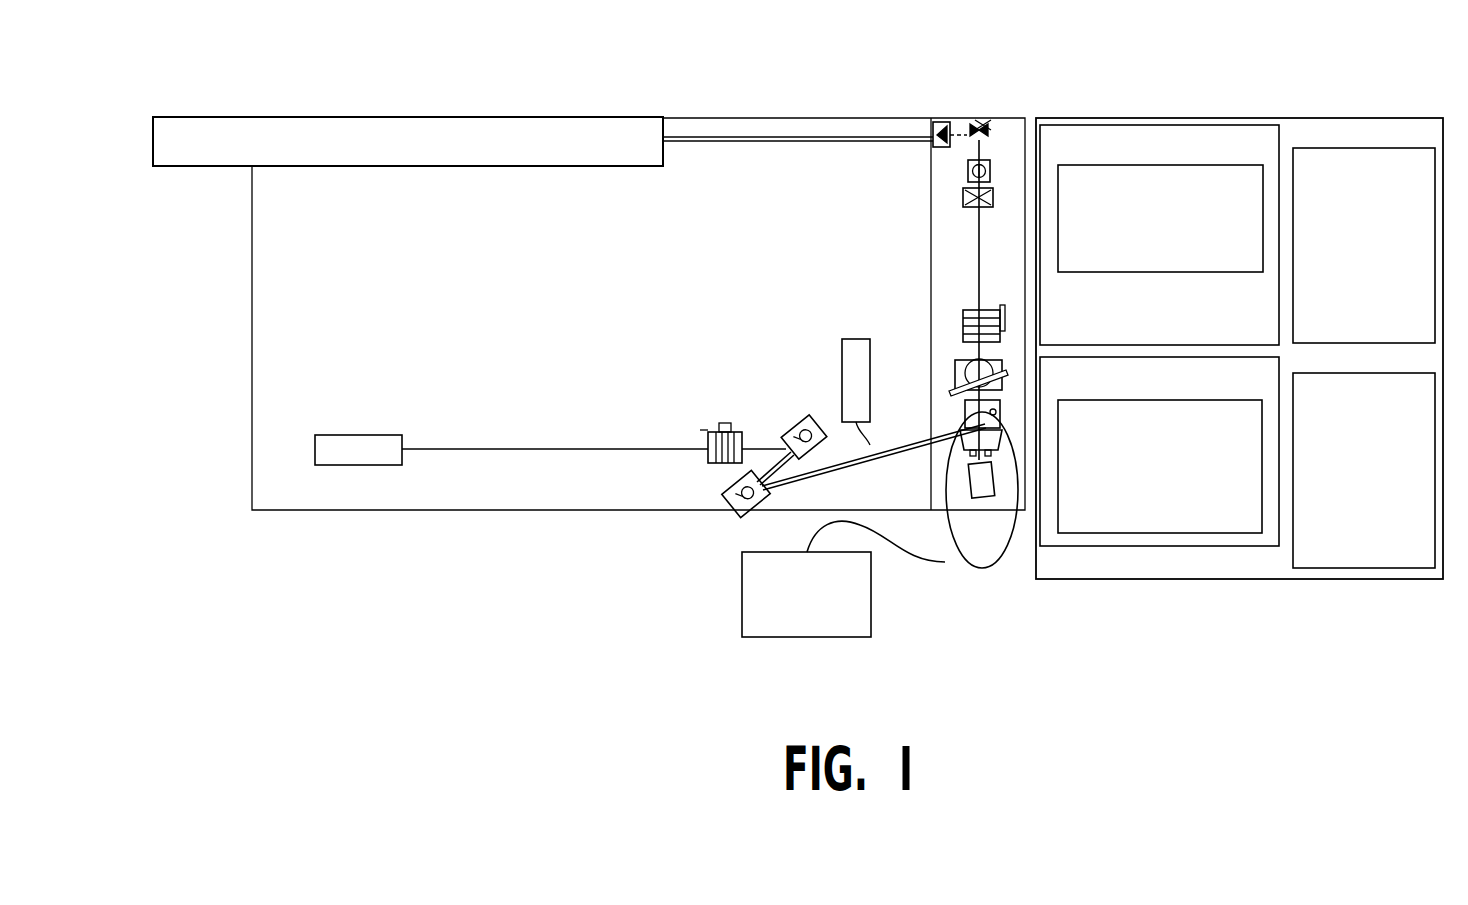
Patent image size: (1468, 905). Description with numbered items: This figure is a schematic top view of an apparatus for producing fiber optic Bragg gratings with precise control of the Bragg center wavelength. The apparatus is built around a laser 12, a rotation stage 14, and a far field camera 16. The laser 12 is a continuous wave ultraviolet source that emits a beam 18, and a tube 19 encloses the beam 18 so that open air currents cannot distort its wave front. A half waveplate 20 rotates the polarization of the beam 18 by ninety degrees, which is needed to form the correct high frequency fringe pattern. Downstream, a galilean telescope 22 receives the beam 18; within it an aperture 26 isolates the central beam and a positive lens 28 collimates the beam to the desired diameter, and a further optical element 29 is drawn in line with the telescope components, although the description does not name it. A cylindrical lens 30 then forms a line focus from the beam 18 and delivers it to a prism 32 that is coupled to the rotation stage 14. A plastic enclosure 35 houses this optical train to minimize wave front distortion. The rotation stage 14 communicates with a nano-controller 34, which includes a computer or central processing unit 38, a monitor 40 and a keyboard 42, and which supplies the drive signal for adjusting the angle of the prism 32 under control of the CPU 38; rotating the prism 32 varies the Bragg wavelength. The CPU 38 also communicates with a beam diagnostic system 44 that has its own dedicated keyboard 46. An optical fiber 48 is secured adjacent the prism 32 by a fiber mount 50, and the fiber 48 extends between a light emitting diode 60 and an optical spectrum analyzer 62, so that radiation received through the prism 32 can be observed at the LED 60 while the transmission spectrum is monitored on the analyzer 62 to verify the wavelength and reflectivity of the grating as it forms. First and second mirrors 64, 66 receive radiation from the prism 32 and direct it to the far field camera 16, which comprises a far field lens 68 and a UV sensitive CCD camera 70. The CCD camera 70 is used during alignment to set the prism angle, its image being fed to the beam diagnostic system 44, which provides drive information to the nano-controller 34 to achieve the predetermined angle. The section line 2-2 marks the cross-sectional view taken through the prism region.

The laser 12 is at (353, 128).
The rotation stage 14 is at (1008, 430).
The far field camera 16 is at (492, 413).
The ultraviolet beam 18 is at (722, 143).
The tube 19 is at (800, 143).
The half waveplate 20 is at (928, 112).
The galilean telescope 22 is at (874, 251).
The aperture 26 is at (963, 197).
The positive lens 28 is at (963, 322).
The lens 29 is at (968, 172).
The cylindrical lens 30 is at (942, 364).
The prism 32 is at (962, 428).
The nano-controller 34 is at (1403, 130).
The plastic enclosure 35 is at (931, 275).
The computer or central processing unit 38 is at (1172, 335).
The monitor 40 is at (1172, 250).
The keyboard 42 is at (1364, 288).
The beam diagnostic system 44 is at (1172, 523).
The dedicated keyboard 46 is at (1364, 520).
The optical fiber 48 is at (975, 565).
The fiber mount 50 is at (958, 513).
The light emitting diode 60 is at (842, 350).
The optical spectrum analyzer 62 is at (748, 607).
The first mirror 64 is at (730, 505).
The second mirror 66 is at (797, 428).
The far field lens 68 is at (712, 430).
The CCD camera 70 is at (333, 448).
The section line 2-2 is at (1001, 405).